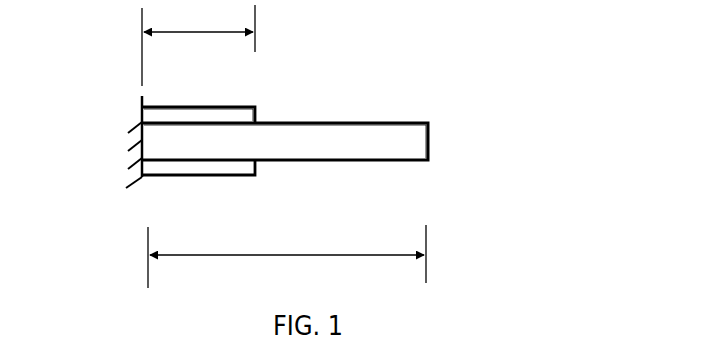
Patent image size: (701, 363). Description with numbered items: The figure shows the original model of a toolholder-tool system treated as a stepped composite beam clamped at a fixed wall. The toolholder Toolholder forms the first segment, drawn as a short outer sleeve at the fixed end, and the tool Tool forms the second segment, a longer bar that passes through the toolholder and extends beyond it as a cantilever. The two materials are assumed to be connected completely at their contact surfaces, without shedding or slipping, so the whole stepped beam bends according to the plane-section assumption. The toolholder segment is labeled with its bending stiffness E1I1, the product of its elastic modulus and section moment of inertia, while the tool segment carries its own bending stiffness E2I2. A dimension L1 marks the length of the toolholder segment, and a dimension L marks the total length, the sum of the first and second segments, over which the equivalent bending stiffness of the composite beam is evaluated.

The tool Tool is at (430, 140).
The toolholder Toolholder is at (152, 178).
The length of the toolholder L1 is at (199, 26).
The sum of length of the first segment and the second segment L is at (287, 254).
The bending stiffness of the toolholder E1I1 is at (223, 95).
The bending stiffness of the tool E2I2 is at (285, 144).